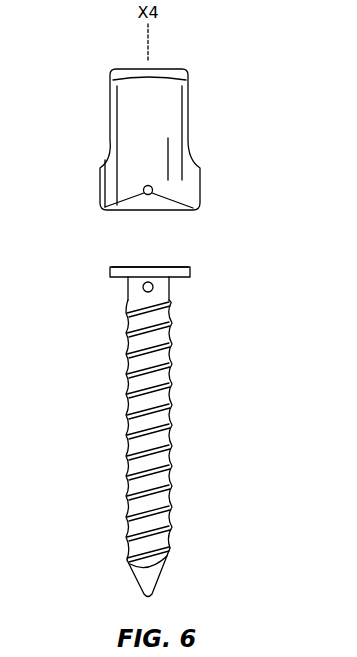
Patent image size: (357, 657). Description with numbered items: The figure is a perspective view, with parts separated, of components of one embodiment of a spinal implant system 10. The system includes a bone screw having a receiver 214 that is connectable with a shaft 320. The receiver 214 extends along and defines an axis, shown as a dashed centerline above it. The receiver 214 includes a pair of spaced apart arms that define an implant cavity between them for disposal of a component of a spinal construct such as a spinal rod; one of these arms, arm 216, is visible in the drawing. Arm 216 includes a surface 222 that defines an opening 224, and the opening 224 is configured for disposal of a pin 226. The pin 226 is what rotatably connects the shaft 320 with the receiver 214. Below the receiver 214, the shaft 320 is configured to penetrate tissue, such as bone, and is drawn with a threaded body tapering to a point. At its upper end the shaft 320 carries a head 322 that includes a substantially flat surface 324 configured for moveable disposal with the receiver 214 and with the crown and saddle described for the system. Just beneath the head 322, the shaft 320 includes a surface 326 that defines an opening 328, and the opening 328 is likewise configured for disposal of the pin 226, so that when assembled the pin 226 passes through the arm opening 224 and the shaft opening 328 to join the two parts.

The spinal implant system 10 is at (46, 140).
The receiver 214 is at (218, 124).
The arm 216 is at (173, 88).
The surface 222 is at (143, 189).
The opening 224 is at (105, 207).
The pin 226 is at (193, 208).
The shaft 320 is at (173, 416).
The head 322 is at (190, 270).
The substantially flat surface 324 is at (112, 267).
The surface 326 is at (162, 288).
The opening 328 is at (132, 293).